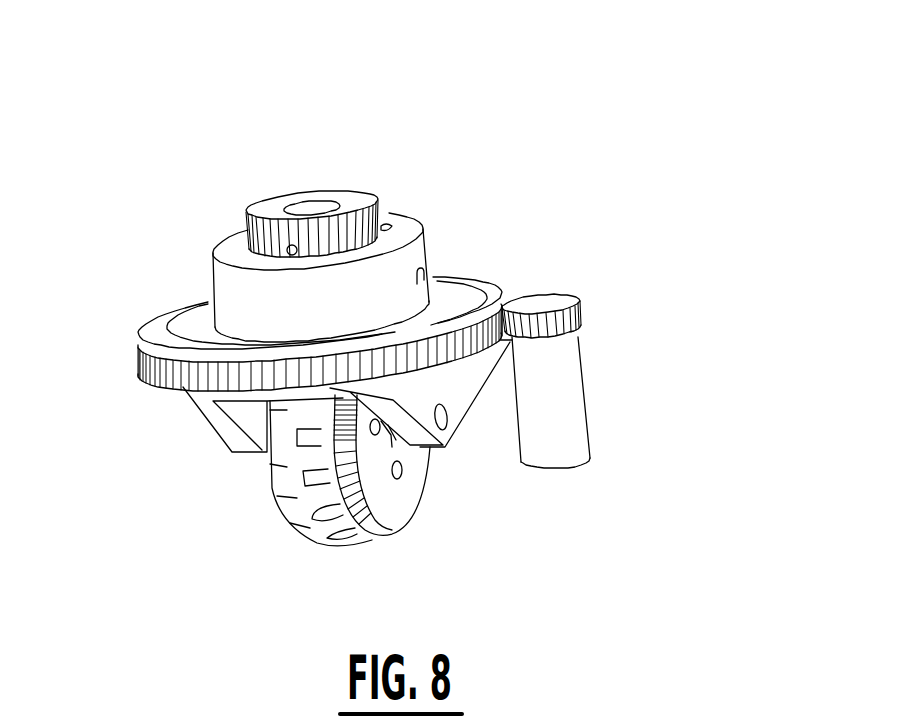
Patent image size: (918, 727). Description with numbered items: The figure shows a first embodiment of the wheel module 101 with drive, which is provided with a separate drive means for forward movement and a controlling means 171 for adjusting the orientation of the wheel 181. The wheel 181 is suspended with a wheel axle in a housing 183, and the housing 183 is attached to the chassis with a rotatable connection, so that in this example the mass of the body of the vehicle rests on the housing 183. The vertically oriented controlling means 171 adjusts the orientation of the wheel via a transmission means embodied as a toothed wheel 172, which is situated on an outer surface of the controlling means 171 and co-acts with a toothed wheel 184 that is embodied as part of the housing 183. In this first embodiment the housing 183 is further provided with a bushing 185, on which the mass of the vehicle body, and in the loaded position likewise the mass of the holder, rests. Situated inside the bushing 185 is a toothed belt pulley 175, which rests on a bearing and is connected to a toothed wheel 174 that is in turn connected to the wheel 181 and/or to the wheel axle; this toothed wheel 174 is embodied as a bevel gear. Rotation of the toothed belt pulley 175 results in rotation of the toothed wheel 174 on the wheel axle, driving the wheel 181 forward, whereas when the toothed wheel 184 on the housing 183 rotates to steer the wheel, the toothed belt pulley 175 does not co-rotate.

The wheel module 101 is at (710, 142).
The controlling means 171 is at (560, 424).
The toothed wheel 172 is at (545, 302).
The toothed wheel 174 is at (397, 503).
The toothed belt pulley 175 is at (348, 201).
The wheel 181 is at (282, 486).
The housing 183 is at (450, 393).
The toothed wheel 184 is at (158, 327).
The bushing 185 is at (409, 227).